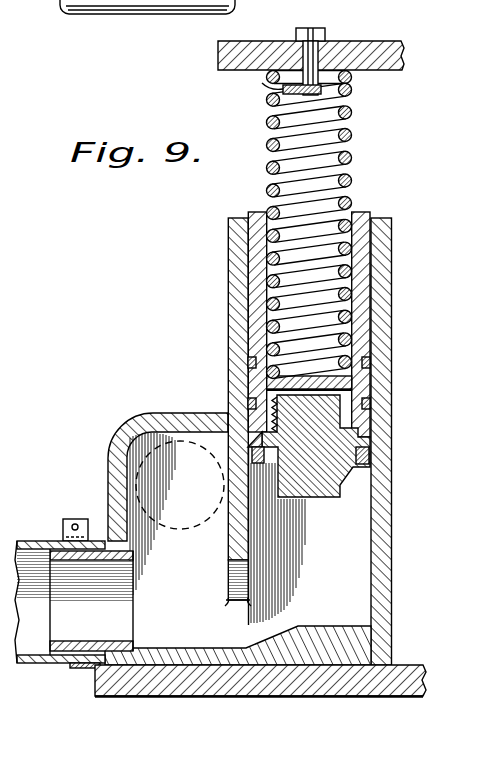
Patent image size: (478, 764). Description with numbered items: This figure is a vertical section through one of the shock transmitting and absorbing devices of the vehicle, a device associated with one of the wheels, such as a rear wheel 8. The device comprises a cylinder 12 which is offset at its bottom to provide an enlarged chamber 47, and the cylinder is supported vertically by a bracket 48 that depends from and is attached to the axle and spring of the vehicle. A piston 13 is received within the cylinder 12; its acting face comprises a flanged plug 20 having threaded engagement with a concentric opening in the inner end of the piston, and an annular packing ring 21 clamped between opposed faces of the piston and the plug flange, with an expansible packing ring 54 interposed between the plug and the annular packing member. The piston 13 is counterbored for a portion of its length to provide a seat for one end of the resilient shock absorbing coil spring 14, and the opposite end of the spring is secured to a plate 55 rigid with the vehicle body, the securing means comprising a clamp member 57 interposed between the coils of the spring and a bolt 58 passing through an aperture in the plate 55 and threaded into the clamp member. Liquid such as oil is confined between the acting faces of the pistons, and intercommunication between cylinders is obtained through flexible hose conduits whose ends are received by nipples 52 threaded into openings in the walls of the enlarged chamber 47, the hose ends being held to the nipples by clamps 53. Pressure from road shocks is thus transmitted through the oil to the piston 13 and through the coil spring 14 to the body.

The rear wheels 8 is at (150, 8).
The cylinder 12 is at (380, 327).
The piston 13 is at (363, 382).
The coil spring 14 is at (348, 156).
The flanged plug 20 is at (320, 494).
The annular packing ring 21 is at (367, 432).
The enlarged chamber 47 is at (161, 418).
The bracket 48 is at (258, 688).
The nipple 52 is at (62, 654).
The clamp 53 is at (73, 518).
The expansible packing ring 54 is at (370, 455).
The plate 55 is at (383, 52).
The clamp member 57 is at (283, 91).
The bolt 58 is at (320, 44).